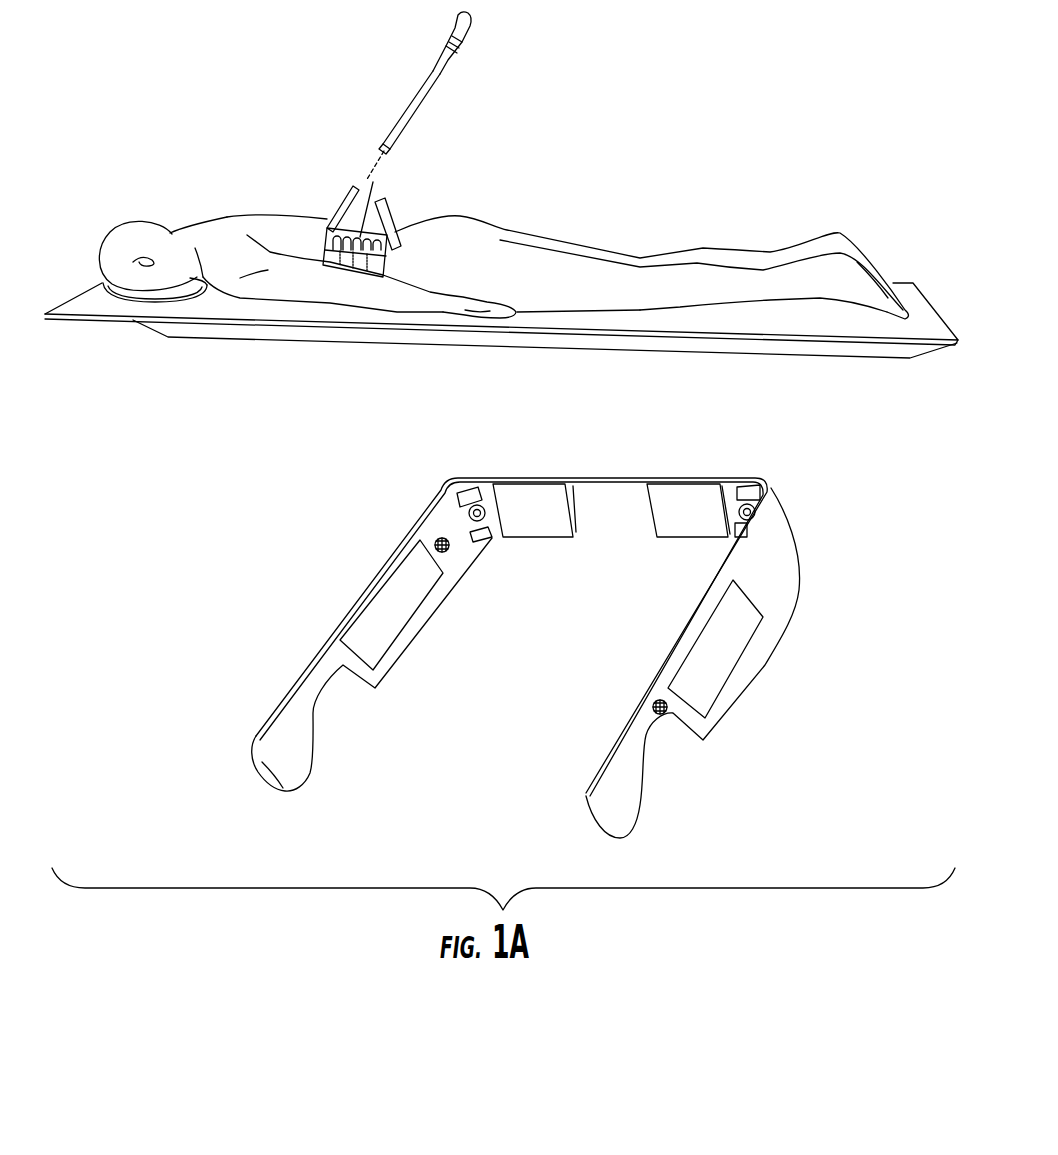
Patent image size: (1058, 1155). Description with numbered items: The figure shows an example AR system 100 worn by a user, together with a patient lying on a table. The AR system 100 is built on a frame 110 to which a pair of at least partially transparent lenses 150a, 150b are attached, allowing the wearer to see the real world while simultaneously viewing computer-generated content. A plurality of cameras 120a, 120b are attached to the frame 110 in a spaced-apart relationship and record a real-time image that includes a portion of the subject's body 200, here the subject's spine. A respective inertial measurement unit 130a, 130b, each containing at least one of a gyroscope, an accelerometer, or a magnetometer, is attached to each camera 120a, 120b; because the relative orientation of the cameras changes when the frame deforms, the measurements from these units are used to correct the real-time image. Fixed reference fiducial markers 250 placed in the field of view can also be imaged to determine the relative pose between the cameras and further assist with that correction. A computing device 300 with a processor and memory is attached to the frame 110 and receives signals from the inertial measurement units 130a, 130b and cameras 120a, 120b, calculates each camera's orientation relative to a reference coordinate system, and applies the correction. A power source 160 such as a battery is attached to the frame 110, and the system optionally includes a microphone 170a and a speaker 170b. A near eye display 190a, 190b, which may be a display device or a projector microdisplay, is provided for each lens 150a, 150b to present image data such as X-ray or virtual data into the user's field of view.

The AR system 100 is at (243, 488).
The frame 110 is at (278, 753).
The camera 120a is at (467, 515).
The camera 120b is at (753, 507).
The inertial measurement unit 130a is at (488, 535).
The inertial measurement unit 130b is at (733, 528).
The lens 150a is at (532, 497).
The lens 150b is at (667, 497).
The power source 160 is at (363, 633).
The microphone 170a is at (433, 542).
The speaker 170b is at (660, 720).
The near eye display 190a is at (463, 490).
The near eye display 190b is at (745, 490).
The subject's body 200 is at (295, 244).
The fixed reference fiducial markers 250 is at (425, 80).
The computing device 300 is at (737, 647).